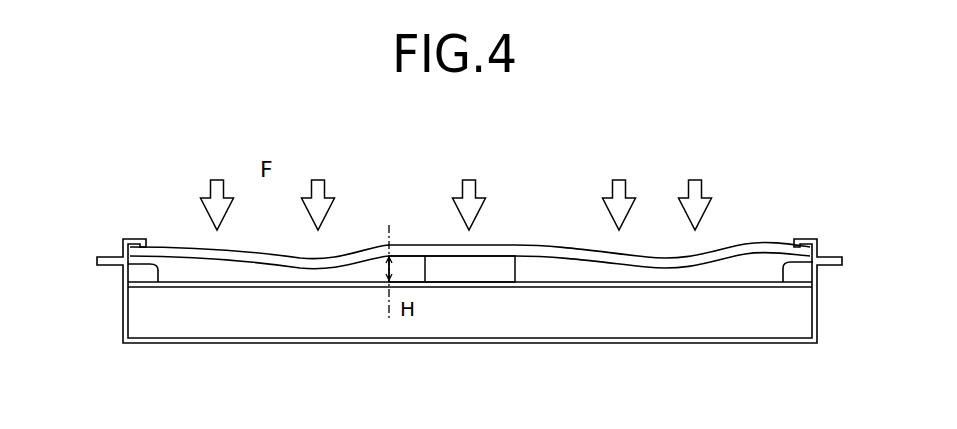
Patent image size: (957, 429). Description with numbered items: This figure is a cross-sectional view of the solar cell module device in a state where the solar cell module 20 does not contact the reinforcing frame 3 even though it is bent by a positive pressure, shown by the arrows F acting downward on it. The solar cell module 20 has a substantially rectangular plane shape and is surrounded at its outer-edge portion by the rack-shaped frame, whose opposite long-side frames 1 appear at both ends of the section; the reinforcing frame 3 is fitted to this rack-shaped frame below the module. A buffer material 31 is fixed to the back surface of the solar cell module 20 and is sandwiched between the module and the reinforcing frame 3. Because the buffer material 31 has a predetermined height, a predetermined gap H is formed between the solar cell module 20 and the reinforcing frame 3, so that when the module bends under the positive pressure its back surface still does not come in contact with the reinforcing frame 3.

The long-side frame 1 is at (125, 317).
The reinforcing frame 3 is at (500, 327).
The solar cell module 20 is at (410, 245).
The buffer material 31 is at (517, 268).